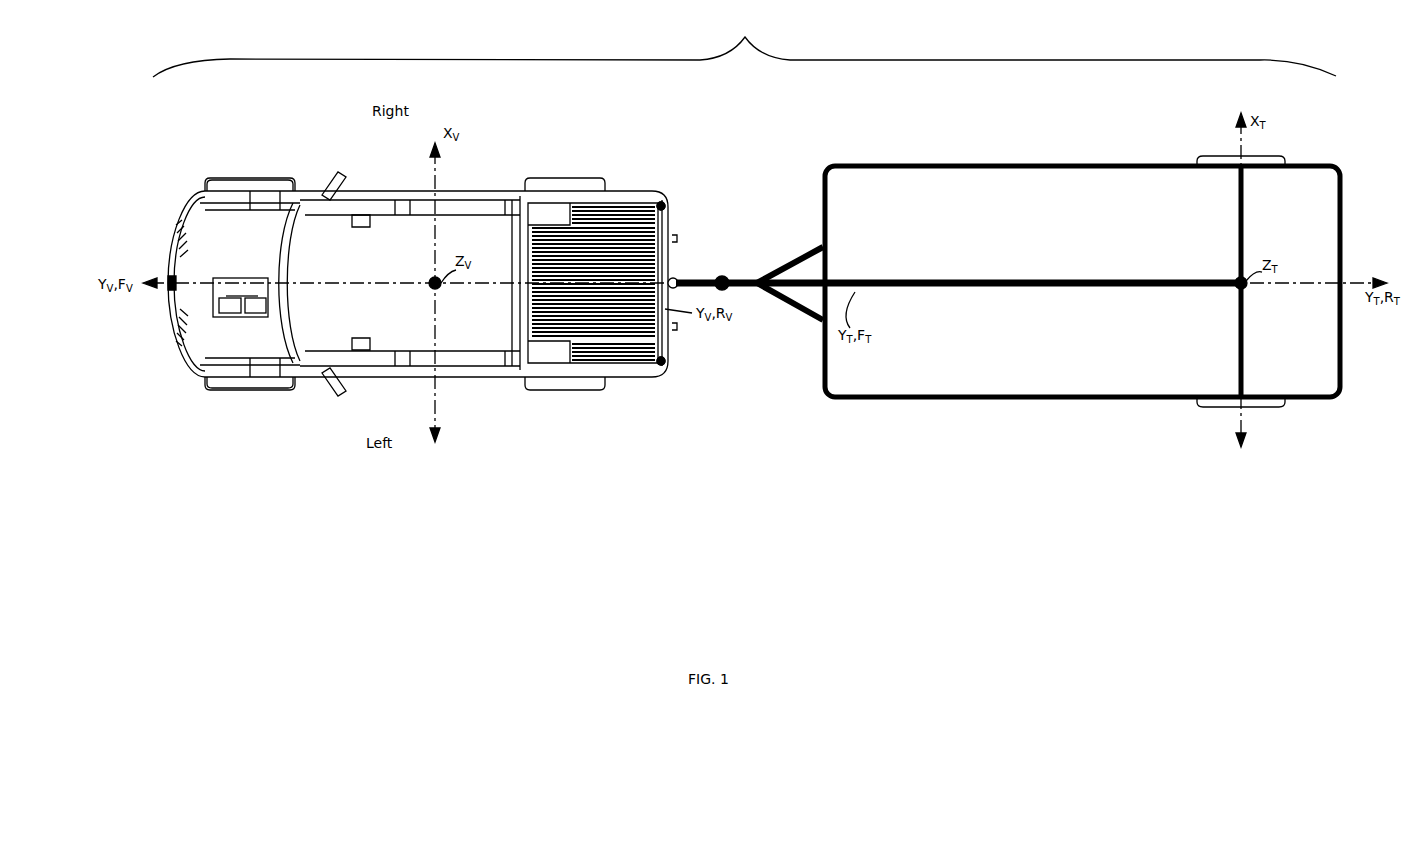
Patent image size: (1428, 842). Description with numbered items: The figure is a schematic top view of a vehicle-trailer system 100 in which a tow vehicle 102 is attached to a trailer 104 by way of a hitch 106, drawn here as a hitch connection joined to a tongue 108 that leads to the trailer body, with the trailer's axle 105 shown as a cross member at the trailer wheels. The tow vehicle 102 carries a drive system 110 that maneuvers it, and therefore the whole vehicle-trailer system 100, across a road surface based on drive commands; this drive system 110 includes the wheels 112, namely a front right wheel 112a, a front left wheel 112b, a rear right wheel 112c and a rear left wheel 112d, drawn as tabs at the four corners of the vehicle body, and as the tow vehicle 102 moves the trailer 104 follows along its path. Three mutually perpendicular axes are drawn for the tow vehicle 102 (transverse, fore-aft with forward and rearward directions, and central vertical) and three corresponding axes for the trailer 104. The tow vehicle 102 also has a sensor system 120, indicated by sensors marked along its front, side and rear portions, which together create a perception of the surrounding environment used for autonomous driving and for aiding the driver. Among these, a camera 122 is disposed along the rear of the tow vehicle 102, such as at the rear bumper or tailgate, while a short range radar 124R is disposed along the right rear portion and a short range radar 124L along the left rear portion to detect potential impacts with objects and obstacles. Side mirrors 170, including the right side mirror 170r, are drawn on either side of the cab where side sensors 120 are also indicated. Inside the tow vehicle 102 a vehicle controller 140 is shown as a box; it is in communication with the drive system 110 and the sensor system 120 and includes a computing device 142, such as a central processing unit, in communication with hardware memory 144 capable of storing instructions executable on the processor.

The vehicle-trailer system 100 is at (744, 45).
The tow vehicle 102 is at (185, 194).
The trailer 104 is at (973, 150).
The trailer axle 105 is at (1238, 227).
The hitch 106 is at (724, 279).
The trailer tongue 108 is at (792, 272).
The drive system 110 is at (1223, 162).
The wheels 112 is at (1226, 403).
The front right wheel 112a is at (266, 184).
The front left wheel 112b is at (266, 386).
The rear right wheel 112c is at (582, 184).
The rear left wheel 112d is at (582, 386).
The sensor system 120 is at (165, 278).
The camera 122 is at (679, 276).
The short range radar 124R is at (664, 203).
The short range radar 124L is at (664, 364).
The vehicle controller 140 is at (240, 297).
The computing device 142 is at (230, 313).
The hardware memory 144 is at (255, 313).
The side mirrors 170 is at (324, 178).
The right side mirror 170r is at (330, 253).